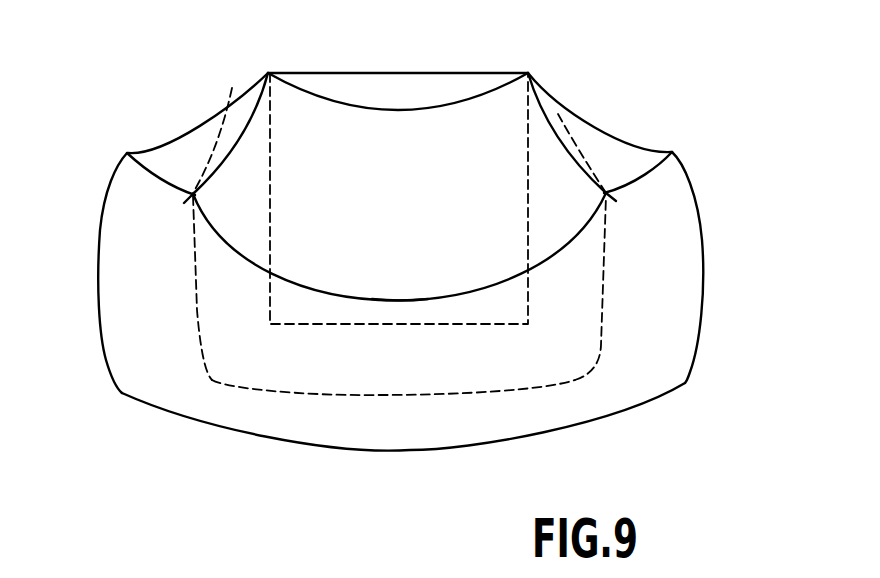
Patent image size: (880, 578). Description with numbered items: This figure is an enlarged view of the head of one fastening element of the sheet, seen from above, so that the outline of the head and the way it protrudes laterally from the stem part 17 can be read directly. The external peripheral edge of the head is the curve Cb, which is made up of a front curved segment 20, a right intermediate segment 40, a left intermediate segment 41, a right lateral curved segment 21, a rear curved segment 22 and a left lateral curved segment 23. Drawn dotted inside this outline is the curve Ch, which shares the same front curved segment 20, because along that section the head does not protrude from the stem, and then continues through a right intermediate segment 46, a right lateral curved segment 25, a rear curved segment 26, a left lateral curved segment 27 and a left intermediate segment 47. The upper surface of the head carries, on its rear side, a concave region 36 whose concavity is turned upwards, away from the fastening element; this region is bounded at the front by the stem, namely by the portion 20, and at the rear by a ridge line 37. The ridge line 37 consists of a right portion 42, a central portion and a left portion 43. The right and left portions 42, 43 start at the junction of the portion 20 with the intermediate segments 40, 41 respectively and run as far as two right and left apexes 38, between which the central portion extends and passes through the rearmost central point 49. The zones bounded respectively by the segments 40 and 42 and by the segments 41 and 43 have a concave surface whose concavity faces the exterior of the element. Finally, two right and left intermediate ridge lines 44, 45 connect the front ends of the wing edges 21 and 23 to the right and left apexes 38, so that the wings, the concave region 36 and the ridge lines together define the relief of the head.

The stem part 17 is at (443, 73).
The front curved segment 20 is at (383, 109).
The right lateral curved segment 21 is at (703, 255).
The rear curved segment 22 is at (433, 448).
The left lateral curved segment 23 is at (100, 281).
The right lateral curved segment 25 is at (607, 293).
The rear curved segment 26 is at (397, 393).
The left lateral curved segment 27 is at (193, 293).
The concave region 36 is at (393, 186).
The ridge line 37 is at (502, 278).
The apexes 38 is at (192, 196).
The right intermediate segment 40 is at (590, 121).
The left intermediate segment 41 is at (213, 130).
The right portion of the ridge line 42 is at (558, 112).
The left portion of the ridge line 43 is at (182, 145).
The right intermediate ridge line 44 is at (657, 170).
The left intermediate ridge line 45 is at (143, 175).
The right intermediate segment 46 is at (590, 158).
The left intermediate segment 47 is at (230, 85).
The rearmost central point 49 is at (400, 300).
The curve Cb is at (122, 393).
The curve Ch is at (602, 336).